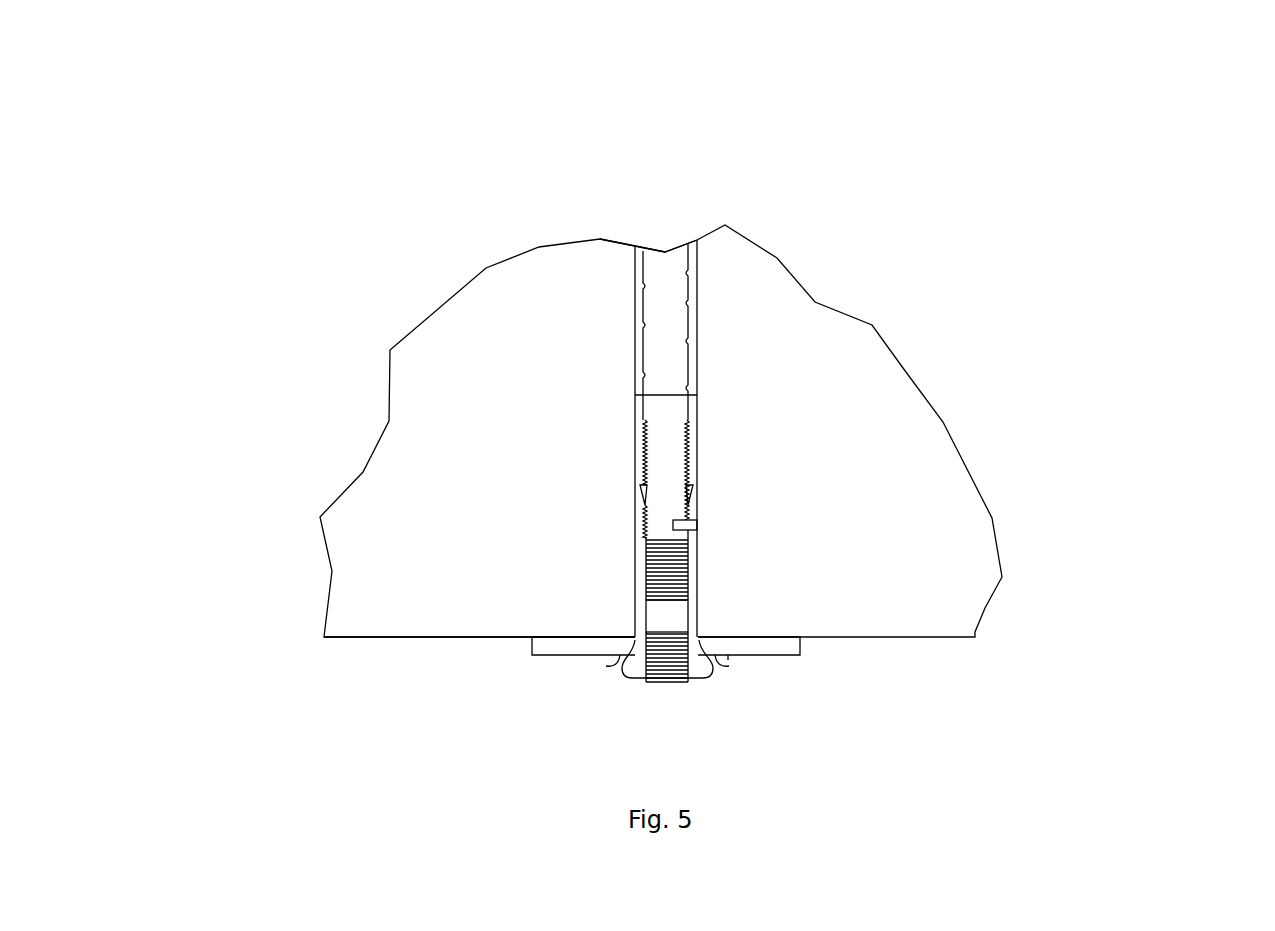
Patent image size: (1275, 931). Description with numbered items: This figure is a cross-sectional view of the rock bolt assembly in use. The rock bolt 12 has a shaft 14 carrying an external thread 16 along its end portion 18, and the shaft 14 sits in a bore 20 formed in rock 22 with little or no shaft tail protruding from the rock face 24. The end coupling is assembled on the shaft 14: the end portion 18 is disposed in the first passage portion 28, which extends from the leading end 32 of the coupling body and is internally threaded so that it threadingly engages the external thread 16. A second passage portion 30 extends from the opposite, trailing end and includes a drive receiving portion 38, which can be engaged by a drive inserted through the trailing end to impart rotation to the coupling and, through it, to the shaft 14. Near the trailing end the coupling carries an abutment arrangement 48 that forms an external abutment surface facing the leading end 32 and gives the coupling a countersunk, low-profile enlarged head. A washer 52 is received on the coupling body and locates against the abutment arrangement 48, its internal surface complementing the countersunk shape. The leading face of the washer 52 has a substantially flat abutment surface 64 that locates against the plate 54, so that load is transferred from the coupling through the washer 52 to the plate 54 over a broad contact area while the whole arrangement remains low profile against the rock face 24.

The rock bolt 12 is at (682, 368).
The shaft 14 is at (672, 338).
The external thread 16 is at (650, 505).
The end portion 18 is at (673, 422).
The bore 20 is at (695, 320).
The rock 22 is at (455, 492).
The rock face 24 is at (358, 637).
The first passage portion 28 is at (665, 560).
The second passage portion 30 is at (643, 650).
The leading end 32 is at (696, 560).
The drive receiving portion 38 is at (683, 618).
The abutment arrangement 48 is at (633, 675).
The washer 52 is at (722, 660).
The plate 54 is at (777, 645).
The abutment surface 64 is at (608, 658).